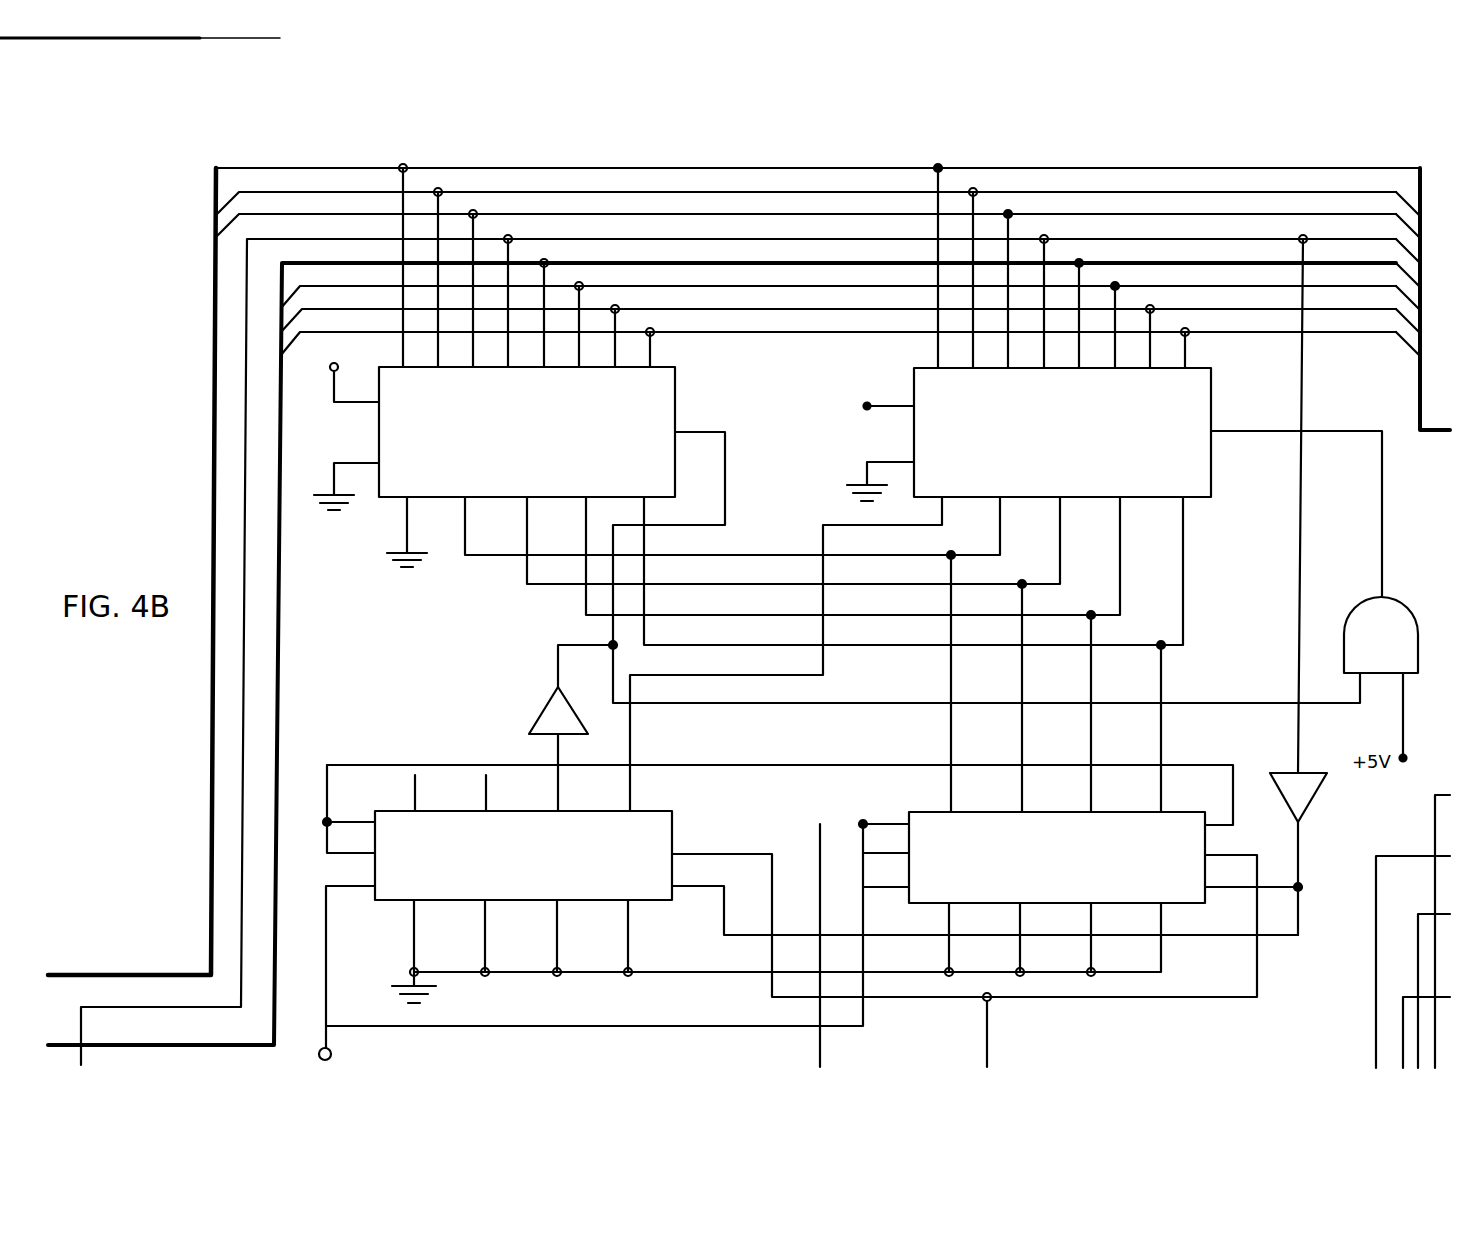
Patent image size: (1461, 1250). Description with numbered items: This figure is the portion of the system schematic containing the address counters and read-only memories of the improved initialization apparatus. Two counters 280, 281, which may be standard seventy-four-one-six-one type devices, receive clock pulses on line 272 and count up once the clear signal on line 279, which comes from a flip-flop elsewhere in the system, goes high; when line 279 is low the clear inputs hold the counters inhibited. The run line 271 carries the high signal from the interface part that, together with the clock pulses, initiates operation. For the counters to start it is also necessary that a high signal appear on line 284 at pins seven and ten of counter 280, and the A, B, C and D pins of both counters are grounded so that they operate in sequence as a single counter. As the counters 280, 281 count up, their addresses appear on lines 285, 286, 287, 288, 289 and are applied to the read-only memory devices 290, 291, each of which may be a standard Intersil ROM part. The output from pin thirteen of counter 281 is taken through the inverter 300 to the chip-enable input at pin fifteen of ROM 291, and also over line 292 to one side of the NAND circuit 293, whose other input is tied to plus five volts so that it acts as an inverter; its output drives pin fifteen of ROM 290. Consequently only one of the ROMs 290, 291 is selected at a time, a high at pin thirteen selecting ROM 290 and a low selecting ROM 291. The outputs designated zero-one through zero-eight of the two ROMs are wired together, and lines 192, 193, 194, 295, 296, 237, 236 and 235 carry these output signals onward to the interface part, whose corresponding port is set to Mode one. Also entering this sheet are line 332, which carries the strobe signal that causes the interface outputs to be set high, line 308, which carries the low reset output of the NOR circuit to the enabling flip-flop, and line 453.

The line 237 is at (936, 212).
The line 236 is at (972, 212).
The line 235 is at (1006, 236).
The line 296 is at (1043, 256).
The line 295 is at (1080, 284).
The line 194 is at (1117, 305).
The line 193 is at (1152, 318).
The line 192 is at (1188, 343).
The read-only memory device 291 is at (677, 385).
The read-only memory device 290 is at (1208, 497).
The NAND circuit 293 is at (1362, 602).
The inverter 300 is at (544, 712).
The line 292 is at (839, 702).
The line 288 is at (951, 674).
The line 287 is at (1022, 674).
The line 286 is at (1092, 674).
The line 285 is at (1162, 674).
The line 289 is at (632, 745).
The counter 281 is at (675, 812).
The counter 280 is at (1210, 830).
The line 272 is at (330, 1042).
The line 284 is at (822, 1052).
The line 279 is at (990, 1052).
The run line 271 is at (1375, 893).
The line 332 is at (1434, 800).
The line 308 is at (1416, 935).
The line 453 is at (1402, 1012).